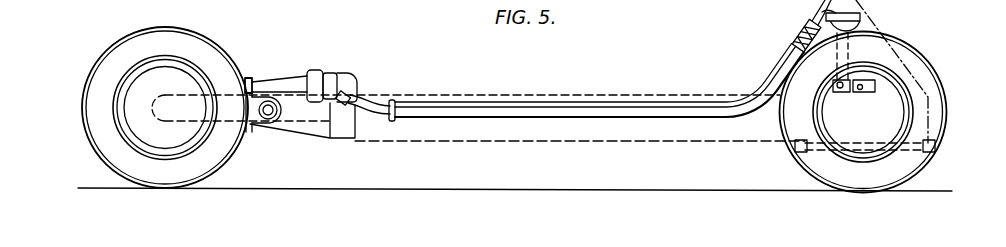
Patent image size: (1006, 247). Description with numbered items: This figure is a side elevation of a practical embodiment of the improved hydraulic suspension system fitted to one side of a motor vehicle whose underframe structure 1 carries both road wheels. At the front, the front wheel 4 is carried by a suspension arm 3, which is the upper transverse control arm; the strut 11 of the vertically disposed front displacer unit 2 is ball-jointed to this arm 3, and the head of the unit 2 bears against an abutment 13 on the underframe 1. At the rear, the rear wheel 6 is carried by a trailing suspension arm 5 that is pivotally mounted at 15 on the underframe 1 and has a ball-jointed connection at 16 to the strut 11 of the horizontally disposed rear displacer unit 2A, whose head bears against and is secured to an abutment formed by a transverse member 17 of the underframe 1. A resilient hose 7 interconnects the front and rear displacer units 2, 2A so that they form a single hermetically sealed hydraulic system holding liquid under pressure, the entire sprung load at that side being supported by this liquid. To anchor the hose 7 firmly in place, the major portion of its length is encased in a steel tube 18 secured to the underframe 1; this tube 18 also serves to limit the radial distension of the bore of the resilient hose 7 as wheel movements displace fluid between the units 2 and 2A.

The underframe structure 1 is at (600, 142).
The front displacer unit 2 is at (861, 20).
The rear displacer unit 2A is at (318, 72).
The suspension arm 3 is at (850, 90).
The front wheel 4 is at (928, 66).
The suspension arm 5 is at (254, 128).
The rear wheel 6 is at (98, 63).
The resilient hose 7 is at (377, 103).
The strut 11 is at (287, 82).
The abutment 13 is at (848, 5).
The pivotal mounting 15 is at (271, 117).
The ball-jointed connection 16 is at (249, 81).
The transverse member 17 is at (341, 75).
The steel tube 18 is at (550, 105).